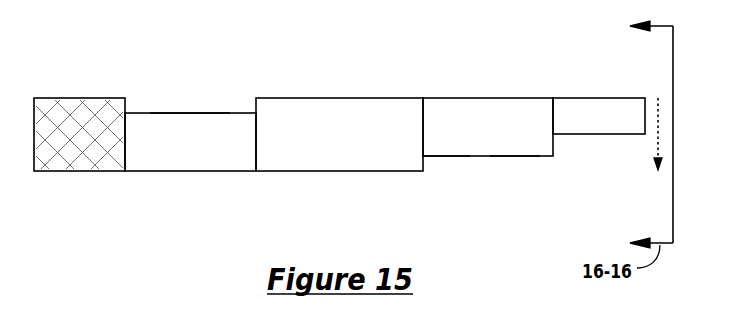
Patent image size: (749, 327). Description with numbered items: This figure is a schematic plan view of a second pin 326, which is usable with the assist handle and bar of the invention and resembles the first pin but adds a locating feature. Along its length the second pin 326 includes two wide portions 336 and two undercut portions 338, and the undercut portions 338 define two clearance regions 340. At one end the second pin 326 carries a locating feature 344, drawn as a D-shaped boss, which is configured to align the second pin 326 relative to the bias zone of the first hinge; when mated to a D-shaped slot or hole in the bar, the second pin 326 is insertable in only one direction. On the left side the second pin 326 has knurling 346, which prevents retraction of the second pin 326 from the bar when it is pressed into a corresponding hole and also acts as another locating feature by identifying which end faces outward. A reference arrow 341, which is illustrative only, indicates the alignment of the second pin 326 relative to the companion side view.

The second pin 326 is at (340, 157).
The wide portions 336 is at (160, 164).
The undercut portions 338 is at (170, 121).
The clearance regions 340 is at (210, 98).
The reference arrow 341 is at (668, 118).
The locating feature 344 is at (603, 112).
The knurling 346 is at (70, 158).